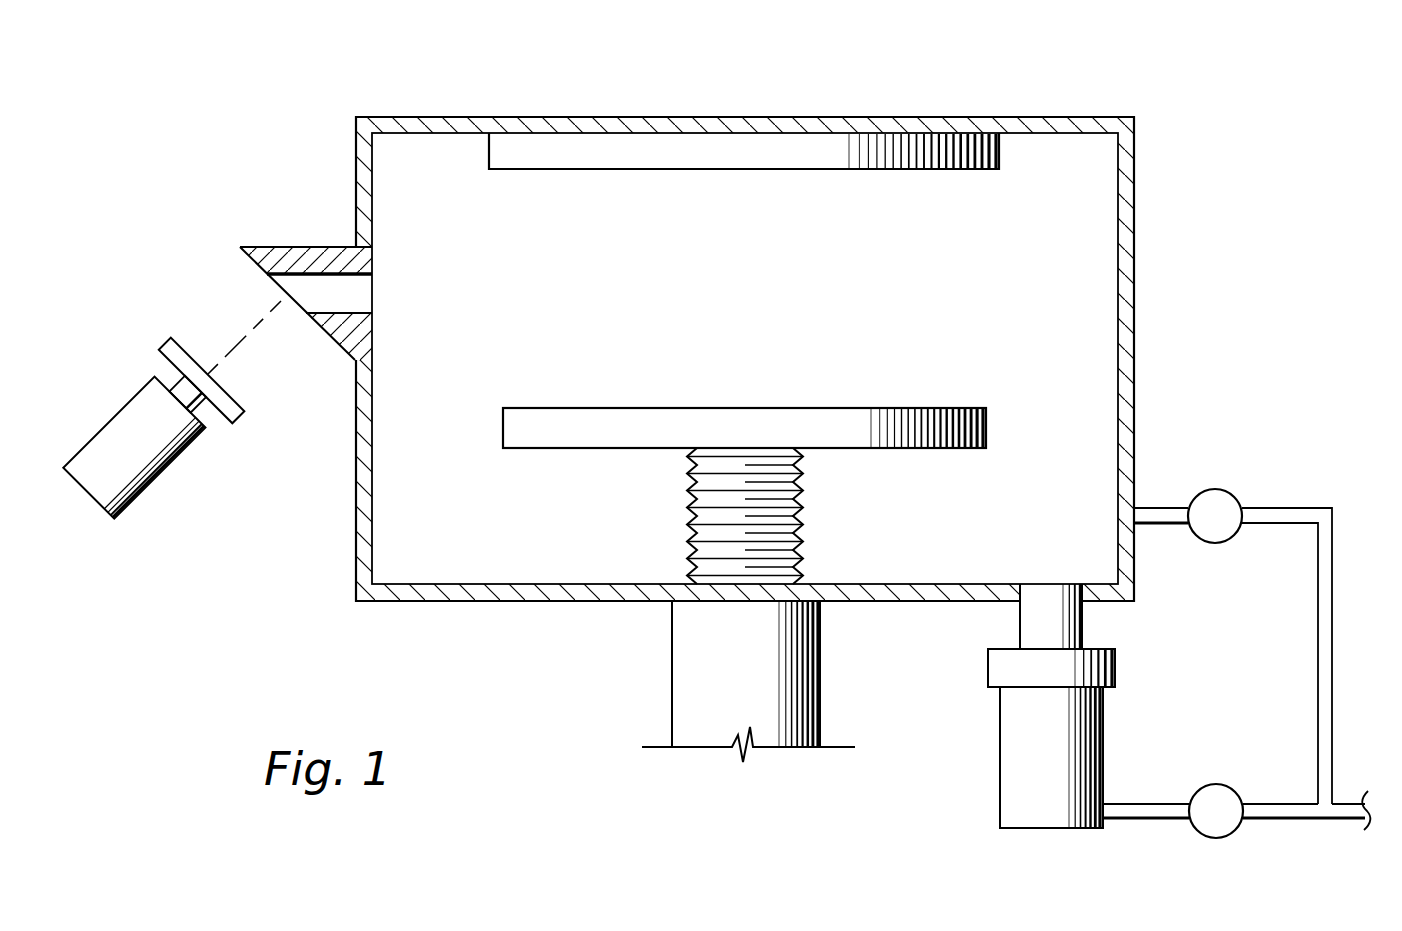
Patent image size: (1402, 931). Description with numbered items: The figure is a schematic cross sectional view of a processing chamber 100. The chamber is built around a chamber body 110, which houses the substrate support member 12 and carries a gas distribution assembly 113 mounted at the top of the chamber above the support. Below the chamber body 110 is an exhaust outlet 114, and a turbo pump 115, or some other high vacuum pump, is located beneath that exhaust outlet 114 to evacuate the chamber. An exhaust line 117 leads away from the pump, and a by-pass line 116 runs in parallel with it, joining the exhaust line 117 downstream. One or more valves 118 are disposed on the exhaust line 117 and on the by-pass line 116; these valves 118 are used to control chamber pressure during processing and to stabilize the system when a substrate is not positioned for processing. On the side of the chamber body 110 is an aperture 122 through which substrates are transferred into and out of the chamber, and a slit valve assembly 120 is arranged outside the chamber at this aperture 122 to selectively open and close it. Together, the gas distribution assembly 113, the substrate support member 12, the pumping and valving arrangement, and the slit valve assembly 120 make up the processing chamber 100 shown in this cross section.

The processing chamber 100 is at (1192, 110).
The chamber body 110 is at (1136, 217).
The gas distribution assembly 113 is at (750, 170).
The substrate support 12 is at (738, 408).
The exhaust outlet 114 is at (1020, 626).
The turbo pump 115 is at (1000, 757).
The by-pass line 116 is at (1336, 637).
The exhaust line 117 is at (1290, 820).
The valves 118 is at (1213, 488).
The slit valve assembly 120 is at (167, 476).
The aperture 122 is at (277, 290).